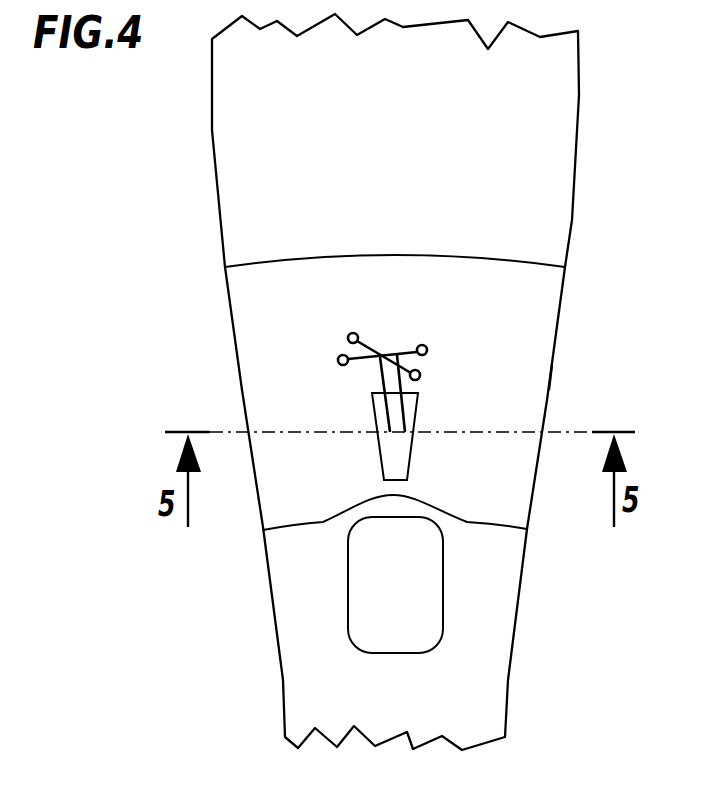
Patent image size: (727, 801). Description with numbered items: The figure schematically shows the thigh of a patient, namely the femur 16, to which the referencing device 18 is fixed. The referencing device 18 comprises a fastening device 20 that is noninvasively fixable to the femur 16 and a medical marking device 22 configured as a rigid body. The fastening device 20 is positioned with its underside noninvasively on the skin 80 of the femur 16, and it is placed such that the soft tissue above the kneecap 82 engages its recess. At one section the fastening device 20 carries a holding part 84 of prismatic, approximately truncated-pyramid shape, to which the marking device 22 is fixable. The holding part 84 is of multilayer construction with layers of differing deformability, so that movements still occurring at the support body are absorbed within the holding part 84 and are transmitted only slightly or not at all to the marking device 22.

The femur 16 is at (542, 137).
The skin 80 is at (542, 195).
The fastening device 20 is at (533, 318).
The referencing device 18 is at (578, 369).
The marking device 22 is at (375, 353).
The holding part 84 is at (398, 464).
The kneecap 82 is at (415, 595).